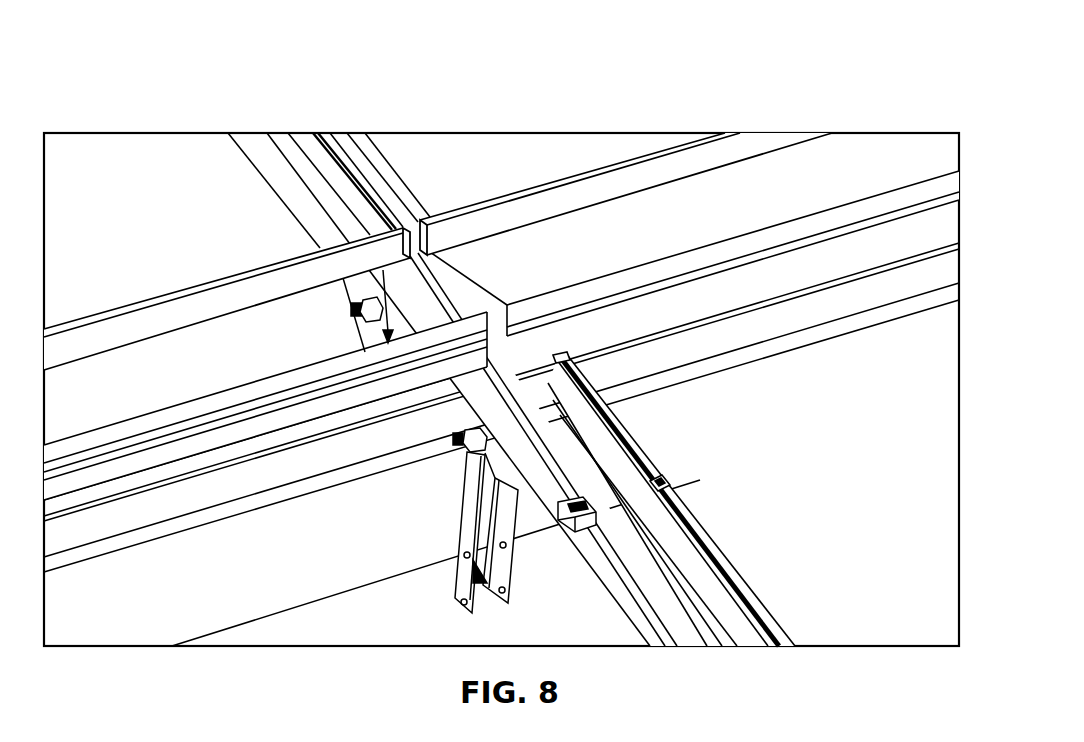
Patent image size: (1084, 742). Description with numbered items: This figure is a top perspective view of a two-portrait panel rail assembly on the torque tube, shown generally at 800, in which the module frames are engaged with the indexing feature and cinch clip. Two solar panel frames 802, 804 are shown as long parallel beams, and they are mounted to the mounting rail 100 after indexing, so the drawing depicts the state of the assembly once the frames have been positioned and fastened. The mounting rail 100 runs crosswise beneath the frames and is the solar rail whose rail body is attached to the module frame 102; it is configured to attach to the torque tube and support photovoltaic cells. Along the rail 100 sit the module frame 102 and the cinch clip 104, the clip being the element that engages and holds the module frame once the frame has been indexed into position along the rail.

The solar panel frame assembly 800 is at (501, 342).
The solar panel frame 802 is at (485, 222).
The solar panel frame 804 is at (230, 300).
The mounting rail 100 is at (604, 608).
The module frame 102 is at (560, 475).
The cinch clip 104 is at (668, 484).